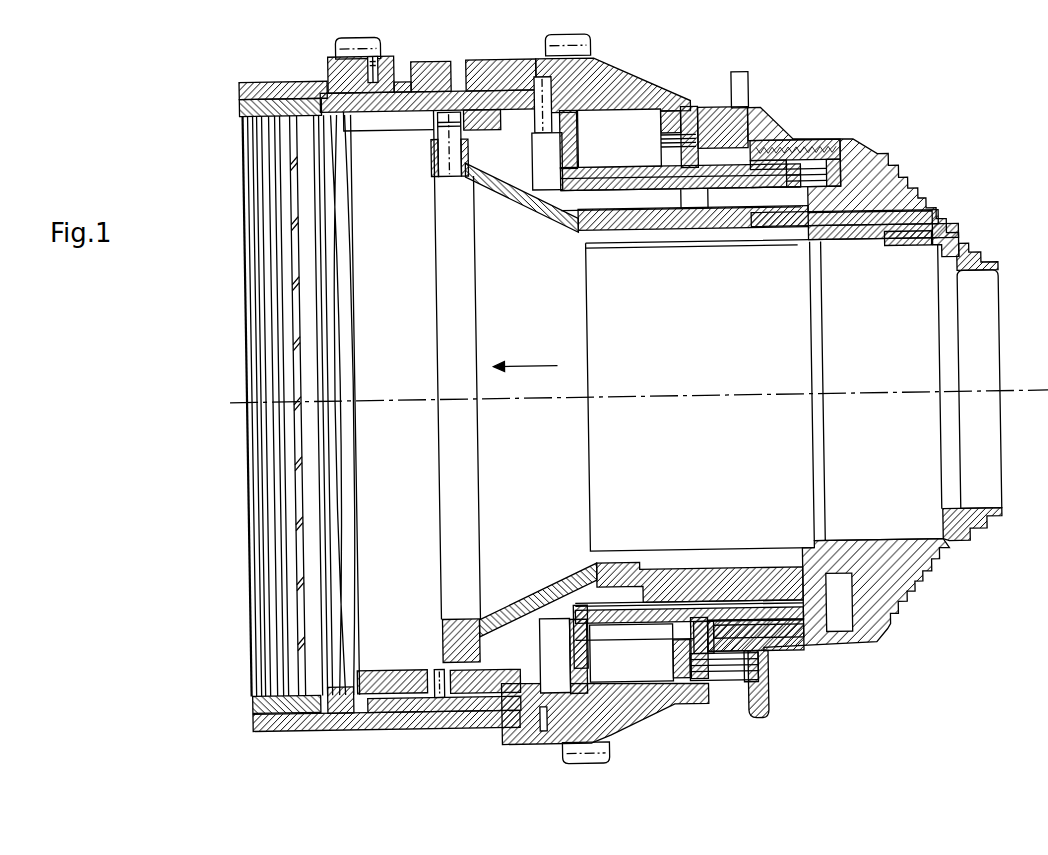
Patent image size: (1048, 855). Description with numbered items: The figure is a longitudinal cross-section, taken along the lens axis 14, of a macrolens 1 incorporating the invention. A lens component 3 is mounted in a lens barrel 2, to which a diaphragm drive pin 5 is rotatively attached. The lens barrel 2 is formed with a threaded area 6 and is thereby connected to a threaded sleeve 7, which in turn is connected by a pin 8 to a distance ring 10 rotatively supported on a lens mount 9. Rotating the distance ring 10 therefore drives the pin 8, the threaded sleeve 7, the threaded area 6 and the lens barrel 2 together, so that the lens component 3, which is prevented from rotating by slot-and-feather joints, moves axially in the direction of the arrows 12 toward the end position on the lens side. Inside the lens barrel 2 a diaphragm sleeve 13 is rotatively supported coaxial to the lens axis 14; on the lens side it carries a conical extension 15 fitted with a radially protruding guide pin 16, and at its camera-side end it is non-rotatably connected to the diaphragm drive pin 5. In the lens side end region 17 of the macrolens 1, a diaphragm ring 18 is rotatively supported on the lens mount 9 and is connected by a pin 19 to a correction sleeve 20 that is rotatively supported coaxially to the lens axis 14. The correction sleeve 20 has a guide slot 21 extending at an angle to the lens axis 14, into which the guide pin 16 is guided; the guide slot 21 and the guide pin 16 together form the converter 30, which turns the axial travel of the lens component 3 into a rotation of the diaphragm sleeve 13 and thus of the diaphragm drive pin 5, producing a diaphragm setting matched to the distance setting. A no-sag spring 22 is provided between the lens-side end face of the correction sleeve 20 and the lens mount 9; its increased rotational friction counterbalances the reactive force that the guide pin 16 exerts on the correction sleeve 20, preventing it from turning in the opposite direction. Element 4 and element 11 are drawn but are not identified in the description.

The macrolens 1 is at (850, 118).
The lens barrel 2 is at (903, 550).
The lens component 3 is at (723, 335).
The retaining ring 4 is at (813, 251).
The diaphragm drive pin 5 is at (855, 222).
The threaded area 6 is at (799, 143).
The threaded sleeve 7 is at (652, 170).
The pin 8 is at (546, 67).
The lens mount 9 is at (473, 87).
The distance ring 10 is at (610, 62).
The drive shaft 11 is at (755, 194).
The arrows 12 is at (540, 365).
The diaphragm sleeve 13 is at (525, 197).
The lens axis 14 is at (405, 399).
The conical extension 15 is at (500, 603).
The guide pin 16 is at (437, 128).
The lens side end region 17 is at (253, 72).
The diaphragm ring 18 is at (343, 42).
The pin 19 is at (453, 739).
The correction sleeve 20 is at (359, 136).
The guide slot 21 is at (382, 114).
The no-sag spring 22 is at (336, 328).
The converter 30 is at (417, 116).